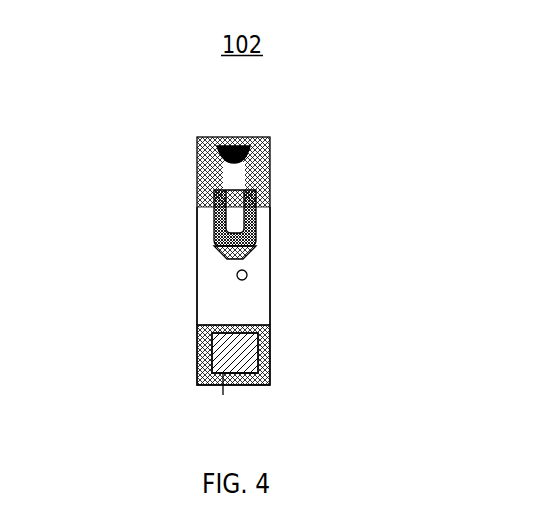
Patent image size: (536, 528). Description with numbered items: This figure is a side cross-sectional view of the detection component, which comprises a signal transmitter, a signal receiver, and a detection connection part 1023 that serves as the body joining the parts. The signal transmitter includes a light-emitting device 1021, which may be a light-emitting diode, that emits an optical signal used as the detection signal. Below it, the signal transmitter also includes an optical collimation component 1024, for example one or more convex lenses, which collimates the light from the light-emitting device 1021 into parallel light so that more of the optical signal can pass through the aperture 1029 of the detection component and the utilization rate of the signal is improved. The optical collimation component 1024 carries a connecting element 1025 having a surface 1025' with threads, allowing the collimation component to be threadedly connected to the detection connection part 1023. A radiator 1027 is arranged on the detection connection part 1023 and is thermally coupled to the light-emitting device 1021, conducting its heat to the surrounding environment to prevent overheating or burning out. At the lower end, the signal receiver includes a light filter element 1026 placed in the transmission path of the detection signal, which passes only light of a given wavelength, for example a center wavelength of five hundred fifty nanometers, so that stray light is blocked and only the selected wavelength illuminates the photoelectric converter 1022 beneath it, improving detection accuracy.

The light-emitting device 1021 is at (286, 261).
The photoelectric converter 1022 is at (293, 364).
The detection connection part 1023 is at (167, 266).
The optical collimation component 1024 is at (293, 267).
The connecting element 1025 is at (296, 222).
The surface with threads 1025' is at (320, 238).
The light filter element 1026 is at (285, 352).
The radiator 1027 is at (163, 126).
The aperture 1029 is at (305, 285).